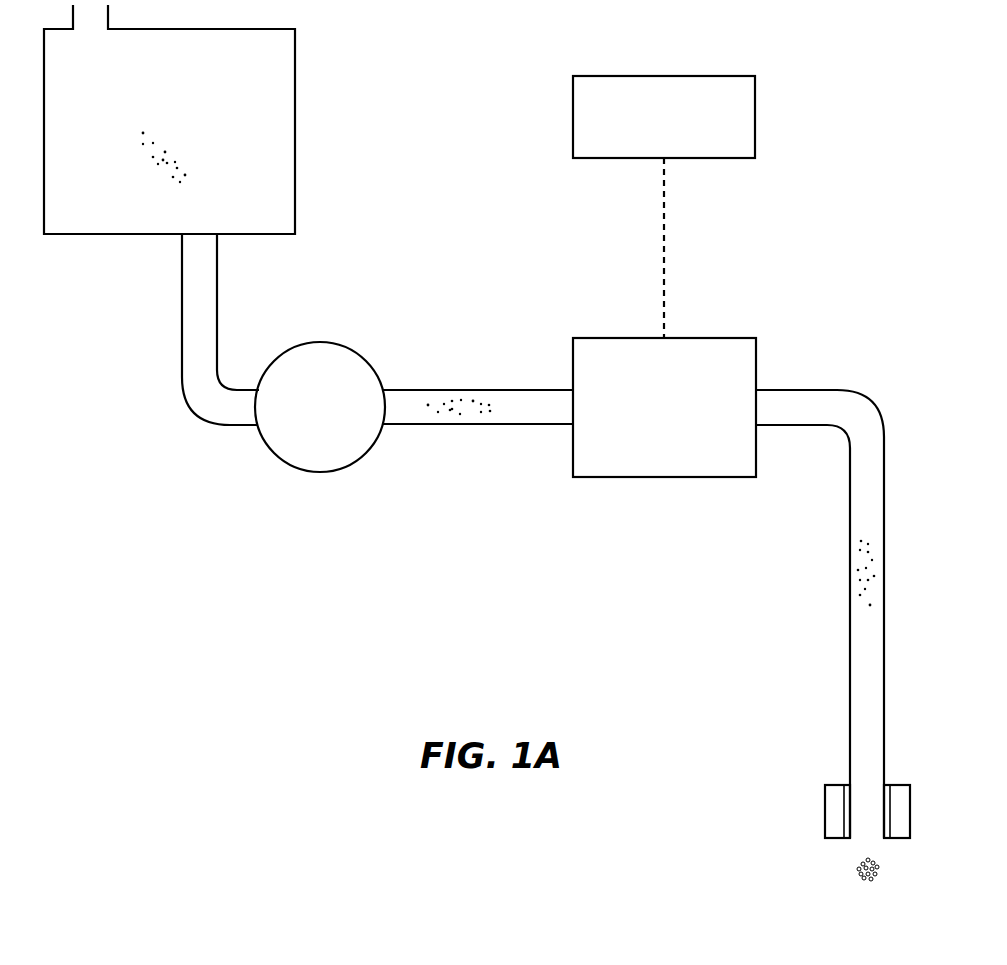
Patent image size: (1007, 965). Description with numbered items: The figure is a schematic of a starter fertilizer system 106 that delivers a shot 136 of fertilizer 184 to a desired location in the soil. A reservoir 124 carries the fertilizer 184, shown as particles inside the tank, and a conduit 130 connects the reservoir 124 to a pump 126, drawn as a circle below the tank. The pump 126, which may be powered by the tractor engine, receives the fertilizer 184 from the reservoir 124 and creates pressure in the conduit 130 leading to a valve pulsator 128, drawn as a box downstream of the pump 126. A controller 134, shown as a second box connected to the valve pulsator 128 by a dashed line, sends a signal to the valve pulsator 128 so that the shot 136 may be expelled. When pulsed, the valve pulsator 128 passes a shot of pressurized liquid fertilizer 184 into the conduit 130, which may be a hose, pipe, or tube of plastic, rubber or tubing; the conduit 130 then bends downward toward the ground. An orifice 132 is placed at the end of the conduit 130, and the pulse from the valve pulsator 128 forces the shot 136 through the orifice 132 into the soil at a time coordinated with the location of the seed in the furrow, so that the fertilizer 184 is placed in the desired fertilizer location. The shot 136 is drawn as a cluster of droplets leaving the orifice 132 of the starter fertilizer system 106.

The starter fertilizer system 106 is at (481, 596).
The reservoir 124 is at (122, 235).
The pump 126 is at (332, 341).
The valve pulsator 128 is at (756, 362).
The conduit 130 is at (886, 638).
The orifice 132 is at (833, 810).
The controller 134 is at (755, 112).
The shot 136 is at (856, 881).
The fertilizer 184 is at (169, 155).